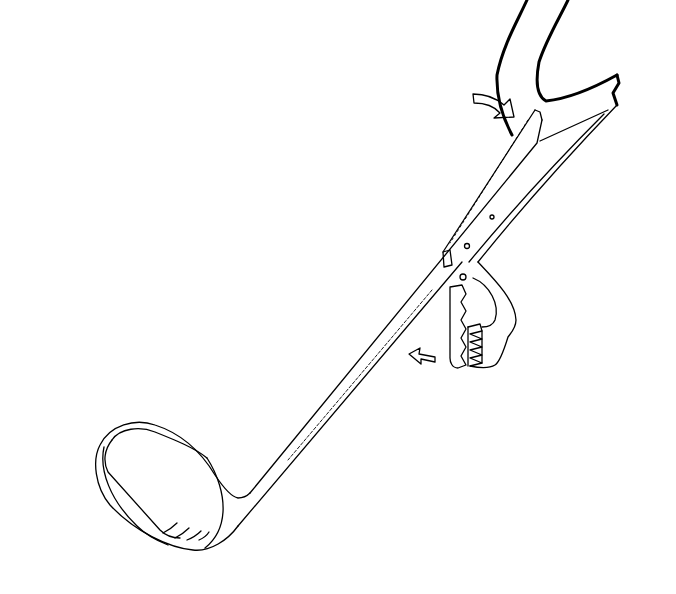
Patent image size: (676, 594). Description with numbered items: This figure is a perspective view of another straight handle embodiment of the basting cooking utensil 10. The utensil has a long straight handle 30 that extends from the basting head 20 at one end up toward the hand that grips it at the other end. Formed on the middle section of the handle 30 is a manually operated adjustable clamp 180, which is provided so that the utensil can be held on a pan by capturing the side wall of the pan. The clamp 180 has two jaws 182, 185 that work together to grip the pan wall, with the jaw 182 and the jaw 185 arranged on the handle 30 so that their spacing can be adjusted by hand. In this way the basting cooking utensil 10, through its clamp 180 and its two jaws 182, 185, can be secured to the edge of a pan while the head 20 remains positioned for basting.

The basting cooking utensil 10 is at (280, 223).
The head loop 20 is at (125, 418).
The handle 30 is at (357, 360).
The manually operated adjustable clamp 180 is at (485, 383).
The jaw 182 is at (457, 368).
The jaw 185 is at (510, 323).